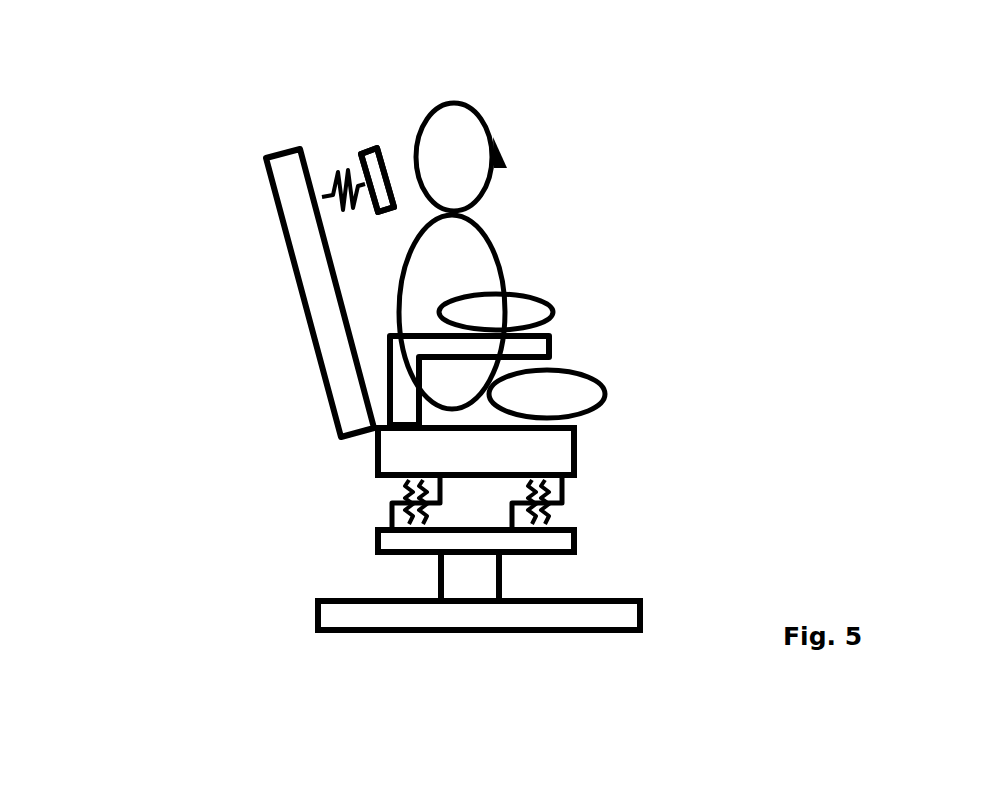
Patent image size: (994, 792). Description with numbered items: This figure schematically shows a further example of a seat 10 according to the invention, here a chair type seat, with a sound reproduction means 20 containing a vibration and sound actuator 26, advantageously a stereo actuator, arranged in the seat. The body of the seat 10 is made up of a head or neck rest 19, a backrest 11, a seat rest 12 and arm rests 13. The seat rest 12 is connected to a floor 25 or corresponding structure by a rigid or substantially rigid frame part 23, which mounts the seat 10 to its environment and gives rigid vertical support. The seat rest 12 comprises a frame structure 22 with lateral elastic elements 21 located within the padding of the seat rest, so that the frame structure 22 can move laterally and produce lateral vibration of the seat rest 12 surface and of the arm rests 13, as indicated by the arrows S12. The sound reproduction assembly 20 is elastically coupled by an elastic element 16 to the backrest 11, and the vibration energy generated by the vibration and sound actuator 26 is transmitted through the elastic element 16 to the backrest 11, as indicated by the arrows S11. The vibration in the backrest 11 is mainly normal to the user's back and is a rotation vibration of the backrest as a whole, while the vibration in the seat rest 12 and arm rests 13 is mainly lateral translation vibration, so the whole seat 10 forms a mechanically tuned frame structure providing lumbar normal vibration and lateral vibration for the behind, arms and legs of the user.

The seat 10 is at (172, 262).
The backrest 11 is at (307, 325).
The seat rest 12 is at (400, 451).
The arm rests 13 is at (558, 338).
The elastic element 16 is at (337, 170).
The head or neck rest 19 is at (375, 145).
The vibration and sound actuator 26 is at (377, 180).
The sound reproduction means 20 is at (310, 531).
The lateral elastic elements 21 is at (402, 490).
The frame structure 22 is at (558, 538).
The frame part 23 is at (472, 583).
The floor 25 is at (415, 622).
The arrows indicating back rest vibration S11 is at (287, 137).
The arrows indicating lateral seat rest vibration S12 is at (573, 346).